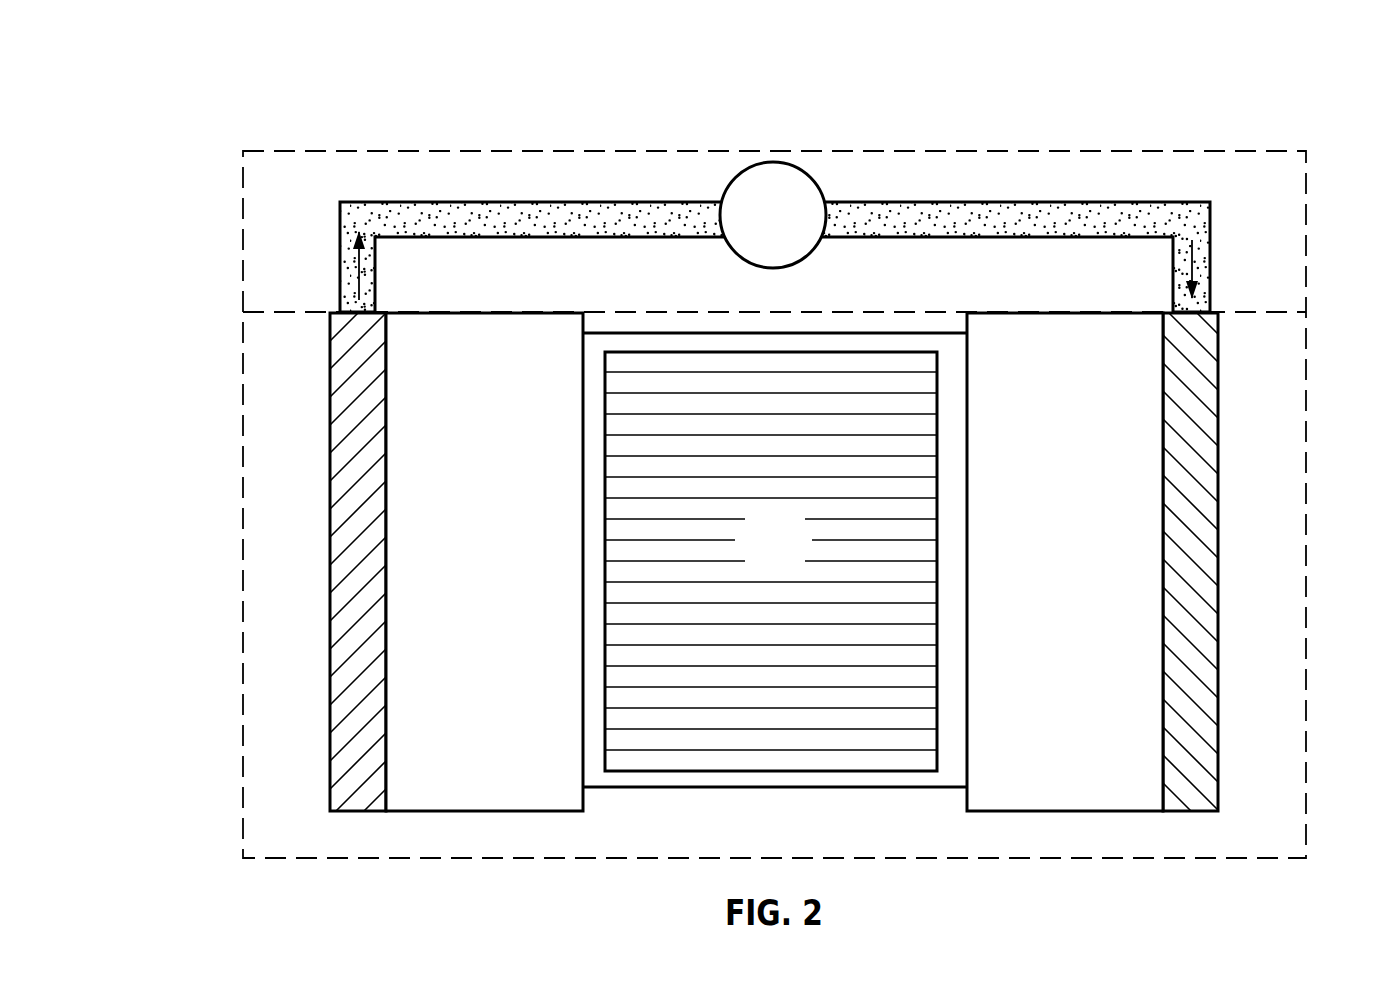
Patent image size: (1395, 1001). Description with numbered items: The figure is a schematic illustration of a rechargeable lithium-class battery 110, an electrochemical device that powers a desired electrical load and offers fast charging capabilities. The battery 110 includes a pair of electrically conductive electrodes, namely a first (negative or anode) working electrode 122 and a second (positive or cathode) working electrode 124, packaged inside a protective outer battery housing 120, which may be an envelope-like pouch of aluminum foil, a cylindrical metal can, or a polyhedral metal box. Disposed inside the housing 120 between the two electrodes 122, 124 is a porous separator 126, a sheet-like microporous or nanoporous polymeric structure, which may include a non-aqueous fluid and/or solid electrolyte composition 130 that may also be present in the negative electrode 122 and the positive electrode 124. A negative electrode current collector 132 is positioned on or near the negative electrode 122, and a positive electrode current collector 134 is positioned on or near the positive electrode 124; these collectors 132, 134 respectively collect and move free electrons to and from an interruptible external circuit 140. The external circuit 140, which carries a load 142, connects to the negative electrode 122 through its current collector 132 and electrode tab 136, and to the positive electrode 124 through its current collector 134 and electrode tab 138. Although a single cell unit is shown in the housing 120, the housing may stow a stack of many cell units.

The rechargeable lithium-class battery 110 is at (148, 110).
The battery housing 120 is at (240, 375).
The first working electrode 122 is at (506, 544).
The second working electrode 124 is at (1092, 544).
The porous separator 126 is at (630, 789).
The electrolyte composition 130 is at (802, 556).
The negative electrode current collector 132 is at (330, 532).
The positive electrode current collector 134 is at (1218, 533).
The electrode tab 136 is at (338, 311).
The electrode tab 138 is at (1212, 311).
The external circuit 140 is at (391, 148).
The load 142 is at (800, 231).